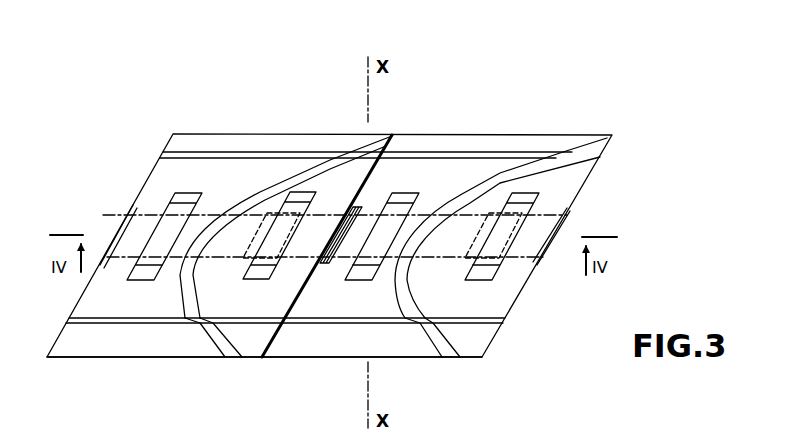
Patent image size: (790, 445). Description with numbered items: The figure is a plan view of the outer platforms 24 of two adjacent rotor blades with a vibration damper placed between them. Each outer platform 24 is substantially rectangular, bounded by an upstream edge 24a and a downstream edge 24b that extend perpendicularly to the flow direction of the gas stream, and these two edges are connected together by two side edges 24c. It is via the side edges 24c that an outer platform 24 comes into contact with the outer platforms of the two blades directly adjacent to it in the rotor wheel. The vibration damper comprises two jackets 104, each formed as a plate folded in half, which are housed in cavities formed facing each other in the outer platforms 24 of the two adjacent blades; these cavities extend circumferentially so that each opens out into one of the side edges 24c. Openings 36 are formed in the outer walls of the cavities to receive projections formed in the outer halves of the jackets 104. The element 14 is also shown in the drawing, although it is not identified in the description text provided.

The outer platform 24 is at (243, 127).
The upstream edge 24a is at (470, 357).
The downstream edge 24b is at (563, 133).
The side edge 24c is at (294, 303).
The rail strip 14 is at (205, 342).
The opening 36 is at (527, 195).
The jacket 104 is at (363, 225).